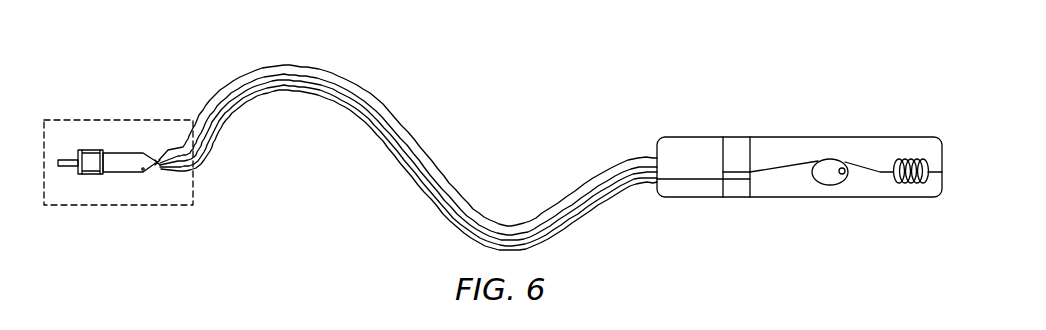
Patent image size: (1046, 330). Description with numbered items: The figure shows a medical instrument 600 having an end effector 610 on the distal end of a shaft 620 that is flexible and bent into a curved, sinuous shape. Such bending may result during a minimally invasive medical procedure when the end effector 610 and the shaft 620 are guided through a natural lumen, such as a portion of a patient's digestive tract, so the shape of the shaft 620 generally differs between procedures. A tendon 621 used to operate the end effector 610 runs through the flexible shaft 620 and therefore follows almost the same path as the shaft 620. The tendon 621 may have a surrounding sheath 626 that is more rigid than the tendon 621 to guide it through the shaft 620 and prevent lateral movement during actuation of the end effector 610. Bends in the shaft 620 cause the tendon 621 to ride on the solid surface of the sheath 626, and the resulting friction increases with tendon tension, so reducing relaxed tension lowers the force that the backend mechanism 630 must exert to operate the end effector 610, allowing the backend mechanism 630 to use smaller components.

The medical instrument 600 is at (173, 71).
The end effector 610 is at (133, 198).
The shaft 620 is at (372, 86).
The tendon 621 is at (445, 208).
The sheath 626 is at (443, 197).
The backend mechanism 630 is at (790, 137).